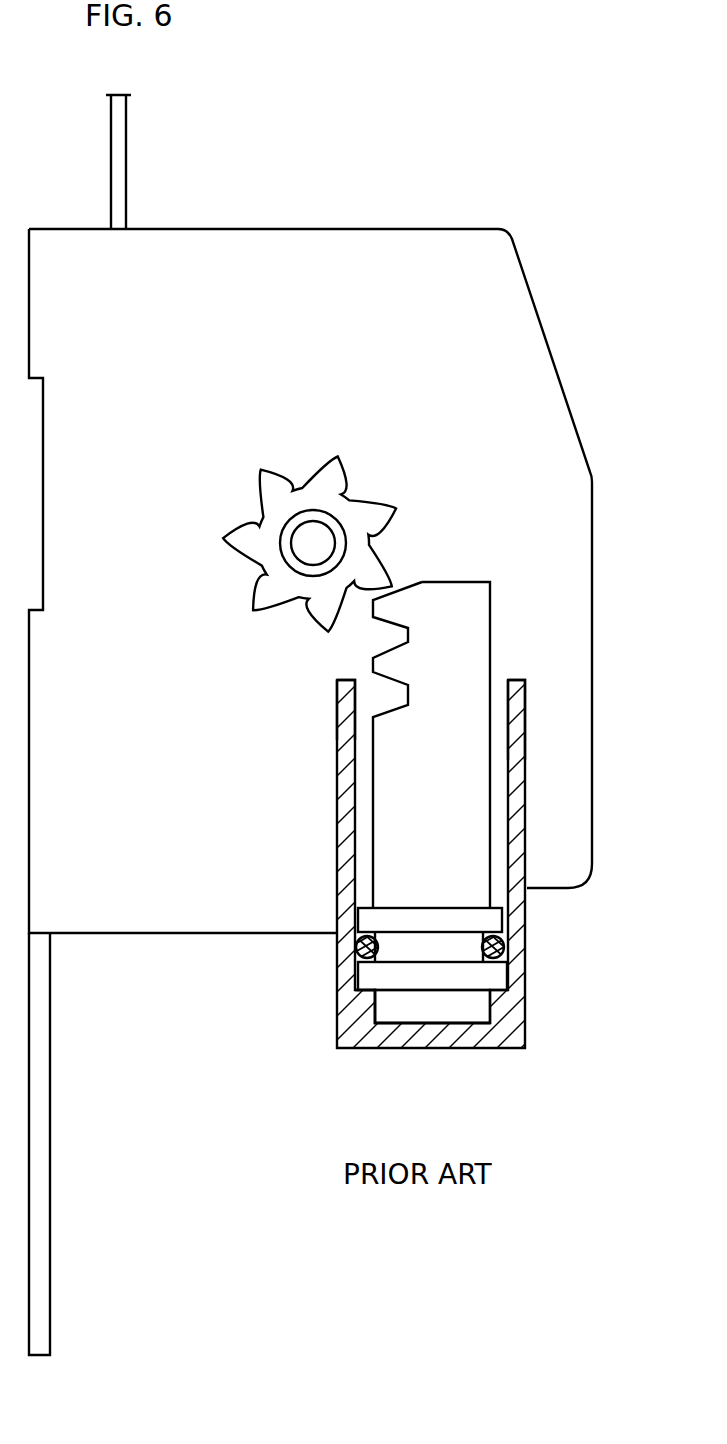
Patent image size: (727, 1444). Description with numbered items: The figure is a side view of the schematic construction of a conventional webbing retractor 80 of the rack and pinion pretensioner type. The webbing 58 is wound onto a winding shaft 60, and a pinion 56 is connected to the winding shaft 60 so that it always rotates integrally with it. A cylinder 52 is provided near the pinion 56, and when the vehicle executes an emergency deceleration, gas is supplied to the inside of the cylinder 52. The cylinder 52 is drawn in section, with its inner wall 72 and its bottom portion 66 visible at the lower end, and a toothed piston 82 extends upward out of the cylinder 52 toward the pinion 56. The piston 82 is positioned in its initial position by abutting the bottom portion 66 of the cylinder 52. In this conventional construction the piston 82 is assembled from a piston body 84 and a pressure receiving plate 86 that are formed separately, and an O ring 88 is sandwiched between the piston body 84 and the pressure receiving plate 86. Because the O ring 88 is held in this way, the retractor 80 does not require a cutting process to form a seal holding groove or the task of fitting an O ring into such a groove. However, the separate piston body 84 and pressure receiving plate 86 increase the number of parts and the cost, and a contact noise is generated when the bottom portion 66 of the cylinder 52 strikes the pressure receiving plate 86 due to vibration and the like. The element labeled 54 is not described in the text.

The webbing retractor 80 is at (292, 112).
The webbing 58 is at (126, 138).
The pinion 56 is at (330, 490).
The winding shaft 60 is at (322, 540).
The piston 82 is at (452, 600).
The cylinder 52 is at (340, 818).
The cylinder top end 54 is at (342, 690).
The inner wall 72 is at (515, 742).
The O ring 88 is at (356, 950).
The piston body 84 is at (492, 928).
The pressure receiving plate 86 is at (490, 977).
The bottom portion 66 is at (358, 992).